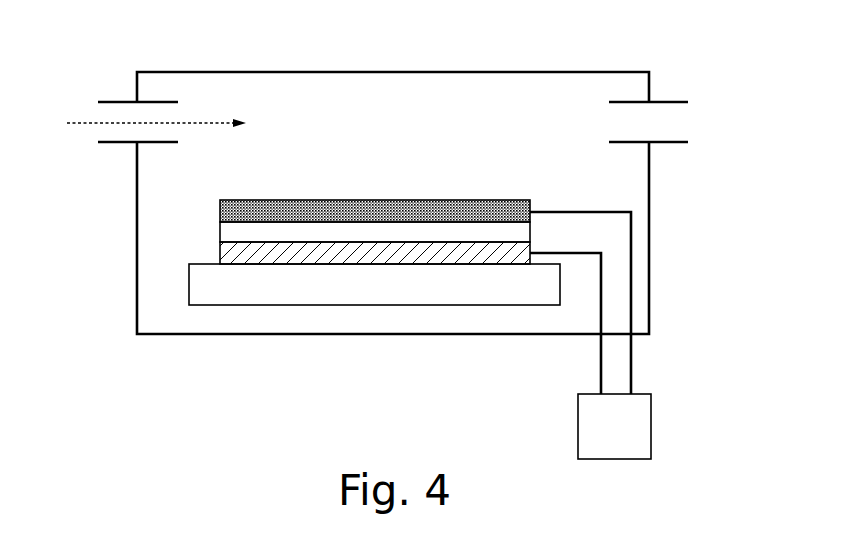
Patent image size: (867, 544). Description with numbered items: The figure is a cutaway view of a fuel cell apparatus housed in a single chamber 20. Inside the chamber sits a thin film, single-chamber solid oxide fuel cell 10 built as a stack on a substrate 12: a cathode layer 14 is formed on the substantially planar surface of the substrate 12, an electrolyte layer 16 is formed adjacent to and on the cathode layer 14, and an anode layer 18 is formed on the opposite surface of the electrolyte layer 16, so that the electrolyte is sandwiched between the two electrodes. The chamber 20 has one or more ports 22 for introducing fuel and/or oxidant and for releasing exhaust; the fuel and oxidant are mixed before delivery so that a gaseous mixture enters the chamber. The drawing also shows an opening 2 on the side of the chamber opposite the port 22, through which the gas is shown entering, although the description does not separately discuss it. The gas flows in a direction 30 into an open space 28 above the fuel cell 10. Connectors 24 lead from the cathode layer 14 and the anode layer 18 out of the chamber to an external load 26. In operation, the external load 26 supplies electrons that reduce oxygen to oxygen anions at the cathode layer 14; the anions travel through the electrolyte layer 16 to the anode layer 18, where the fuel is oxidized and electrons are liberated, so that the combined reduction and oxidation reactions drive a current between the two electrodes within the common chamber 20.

The gas inlet 2 is at (107, 114).
The fuel cell 10 is at (186, 240).
The substrate 12 is at (189, 276).
The cathode layer 14 is at (219, 249).
The electrolyte layer 16 is at (531, 227).
The anode layer 18 is at (288, 200).
The chamber 20 is at (396, 71).
The port 22 is at (675, 126).
The connectors 24 is at (600, 372).
The external load 26 is at (652, 418).
The open space 28 is at (497, 103).
The direction 30 is at (173, 124).